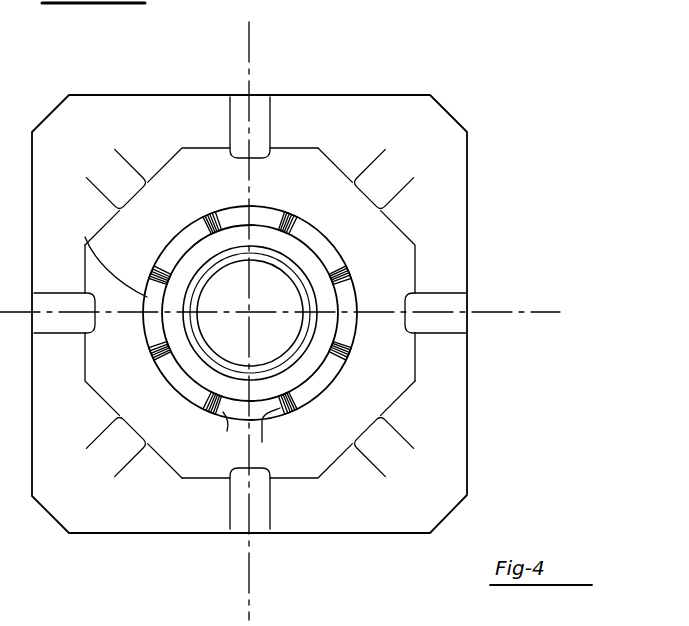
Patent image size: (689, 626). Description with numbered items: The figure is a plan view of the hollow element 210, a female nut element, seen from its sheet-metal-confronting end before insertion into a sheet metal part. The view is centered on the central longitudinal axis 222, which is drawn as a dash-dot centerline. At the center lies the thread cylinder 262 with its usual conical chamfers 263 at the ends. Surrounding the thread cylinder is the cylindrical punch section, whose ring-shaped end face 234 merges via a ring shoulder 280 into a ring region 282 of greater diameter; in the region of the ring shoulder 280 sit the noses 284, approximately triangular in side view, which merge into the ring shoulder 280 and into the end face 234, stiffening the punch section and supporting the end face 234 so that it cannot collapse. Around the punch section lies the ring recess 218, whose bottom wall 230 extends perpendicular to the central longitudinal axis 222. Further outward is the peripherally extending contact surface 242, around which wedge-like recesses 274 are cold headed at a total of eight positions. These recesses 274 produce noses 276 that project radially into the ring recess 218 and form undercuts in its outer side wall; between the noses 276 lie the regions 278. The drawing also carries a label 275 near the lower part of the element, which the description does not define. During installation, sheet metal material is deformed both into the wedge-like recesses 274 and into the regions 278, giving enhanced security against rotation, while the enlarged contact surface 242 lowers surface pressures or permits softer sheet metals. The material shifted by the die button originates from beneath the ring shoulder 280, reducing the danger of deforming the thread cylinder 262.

The hollow element 210 is at (468, 148).
The ring recess 218 is at (325, 450).
The central longitudinal axis 222 is at (249, 35).
The bottom wall 230 is at (393, 377).
The ring-shaped end face 234 is at (207, 382).
The contact surface 242 is at (297, 503).
The thread cylinder 262 is at (279, 361).
The conical chamfers 263 is at (243, 256).
The wedge-like recesses 274 is at (413, 175).
The base wall 275 is at (193, 472).
The noses 276 is at (243, 161).
The regions between the noses 278 is at (310, 157).
The ring shoulder 280 is at (167, 258).
The ring region 282 is at (264, 206).
The noses 284 is at (296, 221).